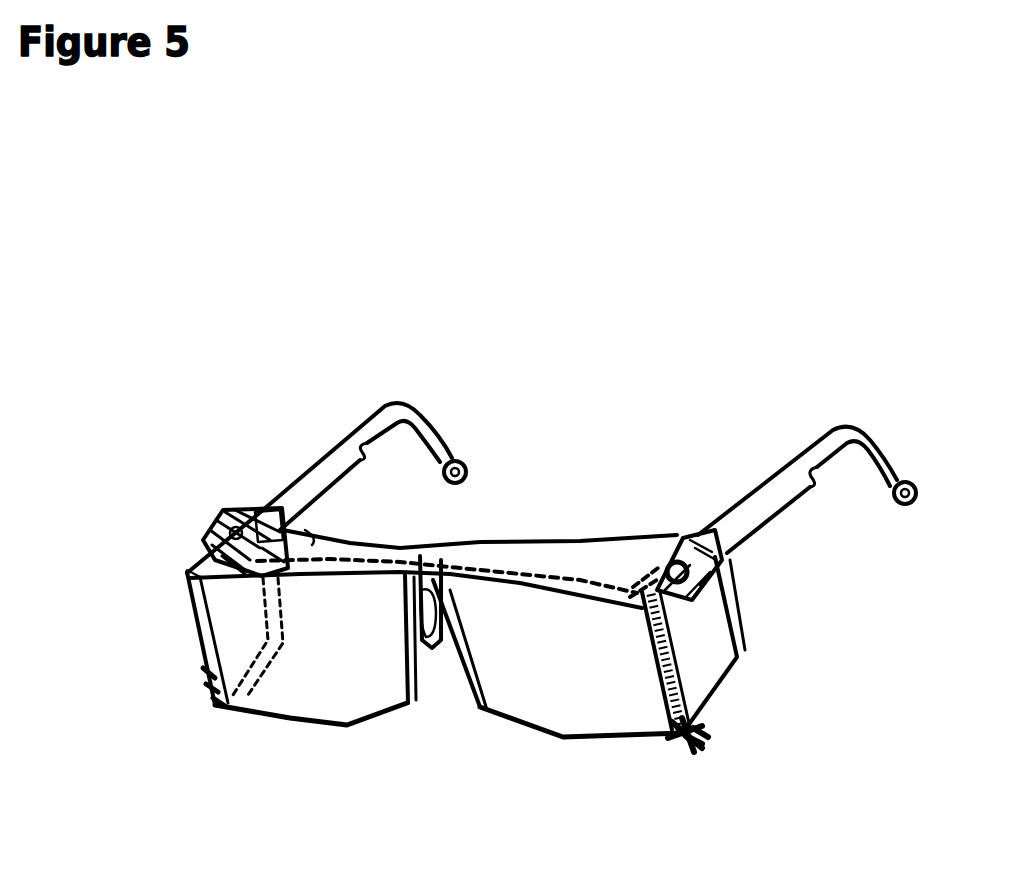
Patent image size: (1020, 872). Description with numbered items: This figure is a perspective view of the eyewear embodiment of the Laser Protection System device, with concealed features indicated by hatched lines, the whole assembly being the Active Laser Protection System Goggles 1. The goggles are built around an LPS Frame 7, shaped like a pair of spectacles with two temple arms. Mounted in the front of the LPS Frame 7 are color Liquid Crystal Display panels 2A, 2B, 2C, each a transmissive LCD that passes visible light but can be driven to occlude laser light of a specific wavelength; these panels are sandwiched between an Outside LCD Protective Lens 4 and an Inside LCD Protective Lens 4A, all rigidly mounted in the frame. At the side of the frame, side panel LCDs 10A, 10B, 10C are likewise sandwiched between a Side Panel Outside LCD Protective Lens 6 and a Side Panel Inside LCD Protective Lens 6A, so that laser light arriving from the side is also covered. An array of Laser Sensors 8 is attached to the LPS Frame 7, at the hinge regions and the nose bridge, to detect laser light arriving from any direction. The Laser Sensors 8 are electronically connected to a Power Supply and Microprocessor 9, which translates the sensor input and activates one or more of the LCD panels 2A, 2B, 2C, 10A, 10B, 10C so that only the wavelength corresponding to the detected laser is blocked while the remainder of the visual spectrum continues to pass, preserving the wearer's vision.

The Active Laser Protection System Goggles 1 is at (617, 552).
The color Liquid Crystal Display panel 2A is at (698, 743).
The color Liquid Crystal Display panel 2B is at (711, 750).
The color Liquid Crystal Display panel 2C is at (712, 740).
The Outside LCD Protective Lens 4 is at (311, 674).
The Inside LCD Protective Lens 4A is at (351, 559).
The Side Panel Outside LCD Protective Lens 6 is at (698, 659).
The Side Panel Inside LCD Protective Lens 6A is at (233, 607).
The LPS Frame 7 is at (766, 504).
The Laser Sensor 8 is at (208, 541).
The Power Supply and Microprocessor 9 is at (432, 552).
The side panel LCD 10A is at (209, 672).
The side panel LCD 10B is at (209, 688).
The side panel LCD 10C is at (218, 700).